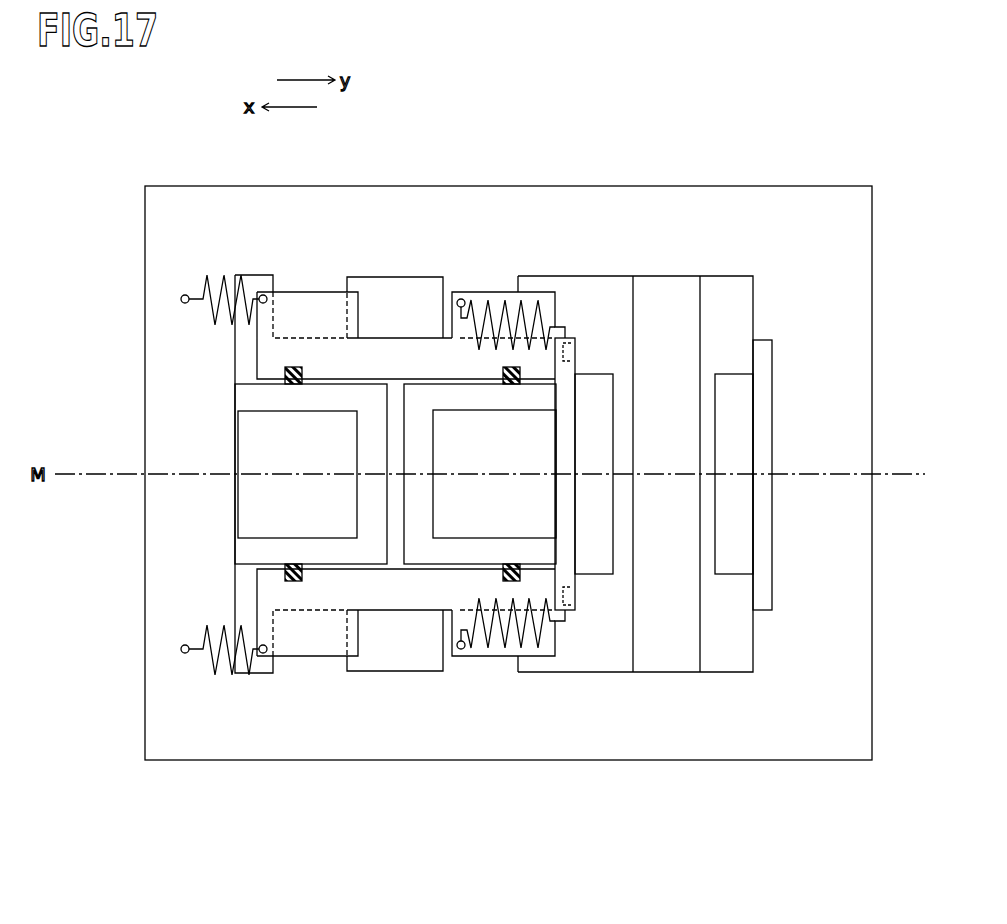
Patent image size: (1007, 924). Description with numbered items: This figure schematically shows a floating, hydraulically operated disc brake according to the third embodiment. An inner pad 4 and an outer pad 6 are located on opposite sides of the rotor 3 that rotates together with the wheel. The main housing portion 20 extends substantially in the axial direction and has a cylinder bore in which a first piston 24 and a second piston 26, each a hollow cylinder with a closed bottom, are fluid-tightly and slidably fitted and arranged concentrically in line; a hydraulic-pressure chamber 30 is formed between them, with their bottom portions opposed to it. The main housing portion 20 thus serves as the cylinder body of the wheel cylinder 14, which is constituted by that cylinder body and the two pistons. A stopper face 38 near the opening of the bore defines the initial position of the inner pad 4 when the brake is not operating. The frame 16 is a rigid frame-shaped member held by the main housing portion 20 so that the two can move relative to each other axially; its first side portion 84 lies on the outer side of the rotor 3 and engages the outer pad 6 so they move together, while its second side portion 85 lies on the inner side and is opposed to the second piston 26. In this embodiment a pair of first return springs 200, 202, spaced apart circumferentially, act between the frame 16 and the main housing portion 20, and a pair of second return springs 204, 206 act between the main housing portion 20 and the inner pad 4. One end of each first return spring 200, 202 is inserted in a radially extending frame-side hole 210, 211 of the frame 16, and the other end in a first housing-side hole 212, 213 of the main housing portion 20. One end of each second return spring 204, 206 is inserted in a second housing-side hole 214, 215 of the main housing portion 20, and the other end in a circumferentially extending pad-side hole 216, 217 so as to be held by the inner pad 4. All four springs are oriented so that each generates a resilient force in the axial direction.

The rotor 3 is at (670, 632).
The inner pad 4 is at (630, 583).
The outer pad 6 is at (718, 358).
The wheel cylinder 14 is at (238, 377).
The frame 16 is at (840, 740).
The main housing portion 20 is at (338, 632).
The first piston 24 is at (413, 400).
The second piston 26 is at (248, 402).
The hydraulic-pressure chamber 30 is at (399, 542).
The stopper face 38 is at (575, 370).
The first side portion 84 is at (813, 390).
The second side portion 85 is at (180, 535).
The first return spring 200 is at (250, 299).
The first return spring 202 is at (215, 673).
The second return spring 204 is at (543, 318).
The second return spring 206 is at (512, 628).
The frame-side hole 210 is at (181, 299).
The frame-side hole 211 is at (181, 650).
The first housing-side hole 212 is at (268, 298).
The first housing-side hole 213 is at (257, 652).
The second housing-side hole 214 is at (465, 300).
The second housing-side hole 215 is at (455, 650).
The pad-side hole 216 is at (572, 348).
The pad-side hole 217 is at (572, 590).